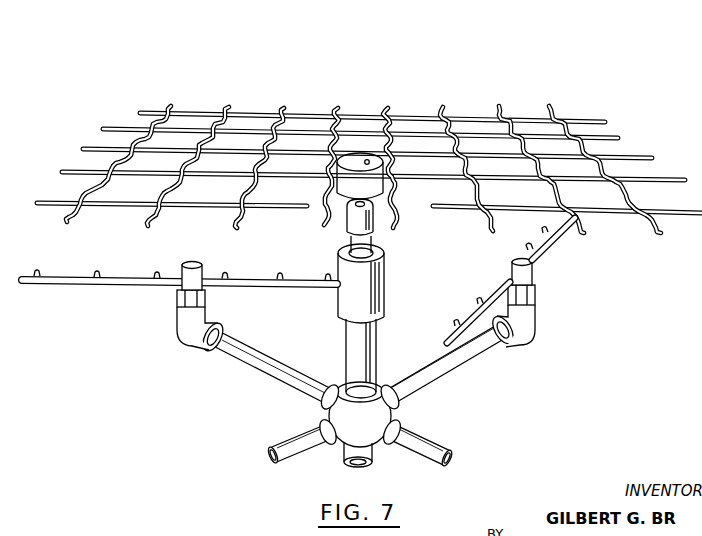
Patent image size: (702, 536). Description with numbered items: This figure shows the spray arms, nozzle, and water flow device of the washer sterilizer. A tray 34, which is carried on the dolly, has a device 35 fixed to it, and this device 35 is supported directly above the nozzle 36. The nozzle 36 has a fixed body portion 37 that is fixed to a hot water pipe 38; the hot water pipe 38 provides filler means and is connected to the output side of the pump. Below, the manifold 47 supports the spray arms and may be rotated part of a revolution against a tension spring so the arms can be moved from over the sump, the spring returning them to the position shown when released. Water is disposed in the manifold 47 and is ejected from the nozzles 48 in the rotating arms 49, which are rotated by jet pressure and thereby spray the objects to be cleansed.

The tray 34 is at (463, 116).
The device 35 is at (361, 158).
The nozzle 36 is at (376, 219).
The fixed body portion 37 is at (383, 280).
The hot water pipe 38 is at (369, 340).
The manifold 47 is at (394, 403).
The nozzle 48 is at (527, 251).
The rotating arm 49 is at (547, 248).